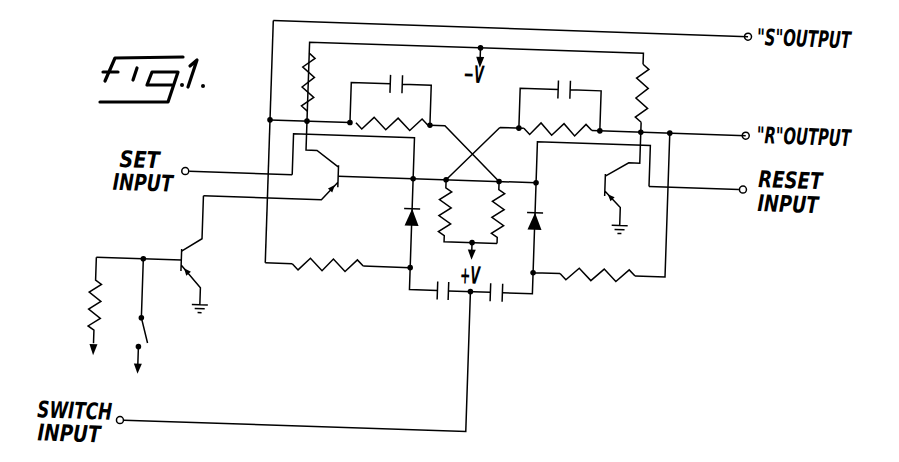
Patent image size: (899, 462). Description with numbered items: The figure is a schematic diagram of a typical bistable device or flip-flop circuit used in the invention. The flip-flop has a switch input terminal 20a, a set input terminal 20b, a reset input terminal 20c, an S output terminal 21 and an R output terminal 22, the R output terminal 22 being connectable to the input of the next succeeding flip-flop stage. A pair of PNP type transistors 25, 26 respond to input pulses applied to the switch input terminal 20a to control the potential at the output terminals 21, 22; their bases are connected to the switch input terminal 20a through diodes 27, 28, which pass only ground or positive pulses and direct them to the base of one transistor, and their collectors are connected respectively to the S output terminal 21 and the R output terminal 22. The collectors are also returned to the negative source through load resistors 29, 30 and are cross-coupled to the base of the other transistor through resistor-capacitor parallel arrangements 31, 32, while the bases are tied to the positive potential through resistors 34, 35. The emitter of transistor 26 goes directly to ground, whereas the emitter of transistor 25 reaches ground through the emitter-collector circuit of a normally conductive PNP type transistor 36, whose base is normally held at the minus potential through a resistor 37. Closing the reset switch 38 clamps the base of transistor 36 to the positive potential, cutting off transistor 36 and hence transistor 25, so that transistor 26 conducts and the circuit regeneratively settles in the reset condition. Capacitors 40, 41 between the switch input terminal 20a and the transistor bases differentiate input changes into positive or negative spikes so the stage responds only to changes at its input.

The switch input terminal 20a is at (131, 429).
The set input terminal 20b is at (188, 170).
The reset input terminal 20c is at (746, 178).
The S output terminal 21 is at (745, 17).
The R output terminal 22 is at (747, 116).
The PNP type transistor 25 is at (342, 181).
The PNP type transistor 26 is at (606, 168).
The diode 27 is at (409, 212).
The diode 28 is at (547, 214).
The load resistor 29 is at (314, 83).
The load resistor 30 is at (648, 80).
The resistor-capacitor parallel arrangement 31 is at (391, 103).
The resistor-capacitor parallel arrangement 32 is at (560, 108).
The resistor 34 is at (455, 215).
The resistor 35 is at (498, 193).
The normally conductive PNP type transistor 36 is at (188, 261).
The resistor 37 is at (97, 315).
The reset switch 38 is at (152, 335).
The capacitor 40 is at (450, 296).
The capacitor 41 is at (500, 291).